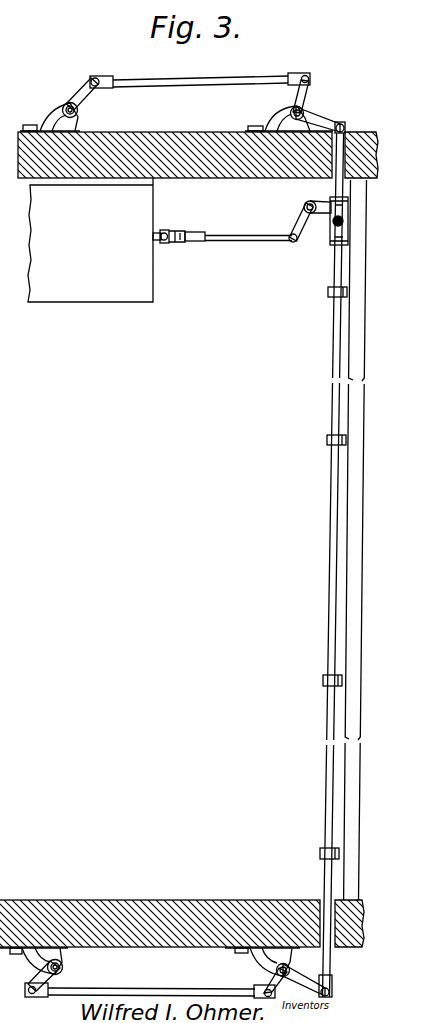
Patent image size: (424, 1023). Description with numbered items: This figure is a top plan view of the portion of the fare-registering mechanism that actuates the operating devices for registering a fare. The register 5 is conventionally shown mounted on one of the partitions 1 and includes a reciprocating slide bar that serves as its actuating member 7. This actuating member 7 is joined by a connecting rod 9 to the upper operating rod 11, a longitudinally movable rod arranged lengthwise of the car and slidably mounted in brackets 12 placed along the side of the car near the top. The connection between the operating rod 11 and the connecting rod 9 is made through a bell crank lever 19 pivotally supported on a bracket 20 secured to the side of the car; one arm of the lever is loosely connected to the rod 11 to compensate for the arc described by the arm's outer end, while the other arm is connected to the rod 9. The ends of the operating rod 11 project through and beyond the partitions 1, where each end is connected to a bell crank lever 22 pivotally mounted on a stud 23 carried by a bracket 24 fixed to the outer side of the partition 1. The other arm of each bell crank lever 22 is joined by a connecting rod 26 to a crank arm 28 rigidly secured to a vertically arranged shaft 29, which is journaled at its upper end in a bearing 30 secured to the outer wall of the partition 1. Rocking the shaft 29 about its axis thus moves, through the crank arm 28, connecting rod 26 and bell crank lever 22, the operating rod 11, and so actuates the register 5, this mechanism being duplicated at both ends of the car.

The partition 1 is at (139, 134).
The register 5 is at (154, 294).
The actuating member 7 is at (166, 232).
The connecting rod 9 is at (232, 232).
The operating rod 11 is at (330, 627).
The bracket 12 is at (327, 292).
The bell crank lever 19 is at (300, 221).
The bracket 20 is at (312, 202).
The bell crank lever 22 is at (321, 118).
The stud 23 is at (308, 110).
The bracket 24 is at (45, 110).
The connecting rod 26 is at (191, 79).
The crank arm 28 is at (78, 92).
The shaft 29 is at (80, 113).
The bearing 30 is at (82, 108).